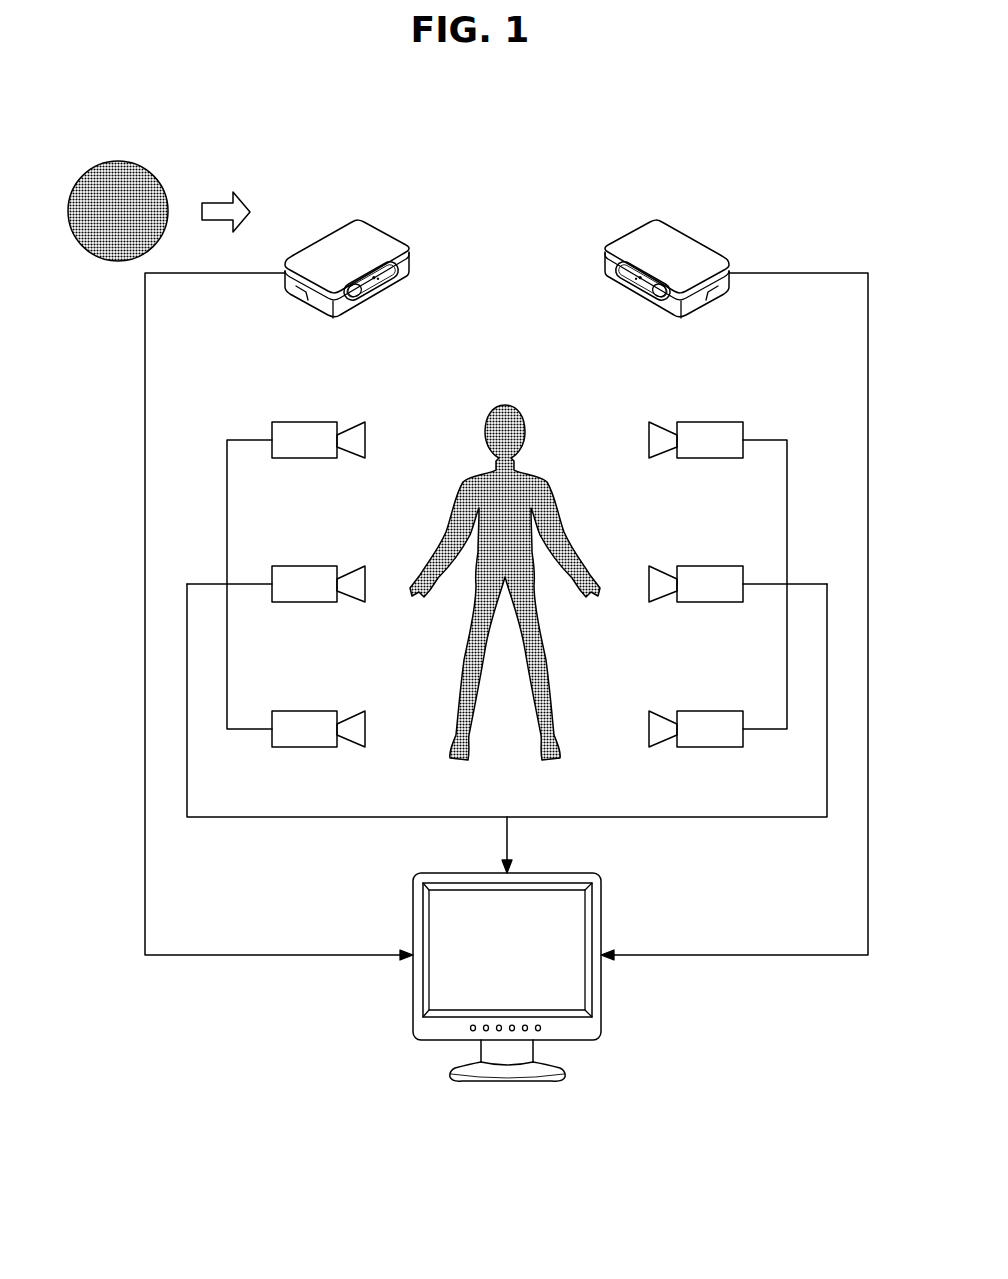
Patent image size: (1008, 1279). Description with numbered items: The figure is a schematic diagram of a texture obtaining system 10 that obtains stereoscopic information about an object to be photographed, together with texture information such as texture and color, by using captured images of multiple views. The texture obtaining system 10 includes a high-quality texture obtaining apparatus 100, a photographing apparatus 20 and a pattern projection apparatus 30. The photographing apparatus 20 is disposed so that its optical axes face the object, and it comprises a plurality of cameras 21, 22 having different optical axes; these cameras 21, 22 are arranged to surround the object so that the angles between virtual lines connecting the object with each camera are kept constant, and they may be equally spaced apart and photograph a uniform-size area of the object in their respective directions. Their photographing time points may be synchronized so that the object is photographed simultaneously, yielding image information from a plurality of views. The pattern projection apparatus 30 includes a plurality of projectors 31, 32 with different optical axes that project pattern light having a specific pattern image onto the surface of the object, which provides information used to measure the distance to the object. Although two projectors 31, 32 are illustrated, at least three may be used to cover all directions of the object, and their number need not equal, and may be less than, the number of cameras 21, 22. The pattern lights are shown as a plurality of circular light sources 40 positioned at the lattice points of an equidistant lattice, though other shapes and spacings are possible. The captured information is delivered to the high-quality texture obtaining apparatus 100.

The texture obtaining system 10 is at (505, 404).
The photographing apparatus 20 is at (288, 490).
The camera 21 is at (303, 459).
The camera 22 is at (303, 565).
The pattern projection apparatus 30 is at (662, 167).
The projector 31 is at (360, 220).
The second radar sensor 32 is at (653, 220).
The circular light sources 40 is at (157, 177).
The high-quality texture obtaining apparatus 100 is at (552, 873).